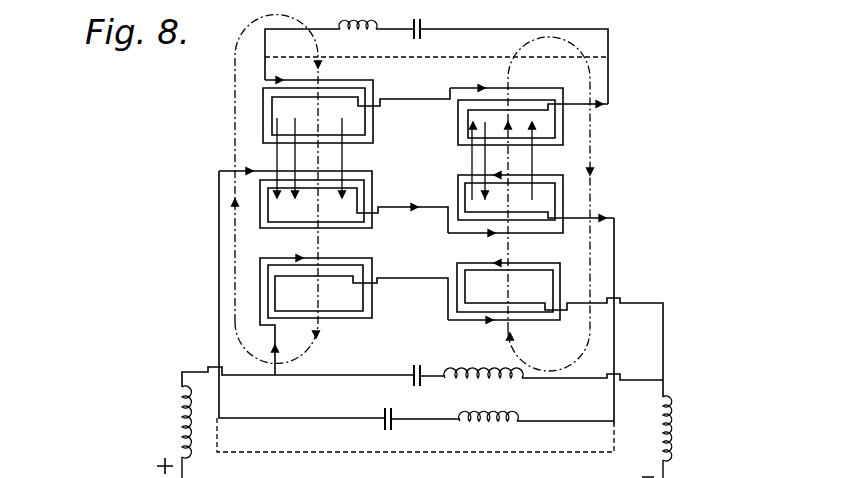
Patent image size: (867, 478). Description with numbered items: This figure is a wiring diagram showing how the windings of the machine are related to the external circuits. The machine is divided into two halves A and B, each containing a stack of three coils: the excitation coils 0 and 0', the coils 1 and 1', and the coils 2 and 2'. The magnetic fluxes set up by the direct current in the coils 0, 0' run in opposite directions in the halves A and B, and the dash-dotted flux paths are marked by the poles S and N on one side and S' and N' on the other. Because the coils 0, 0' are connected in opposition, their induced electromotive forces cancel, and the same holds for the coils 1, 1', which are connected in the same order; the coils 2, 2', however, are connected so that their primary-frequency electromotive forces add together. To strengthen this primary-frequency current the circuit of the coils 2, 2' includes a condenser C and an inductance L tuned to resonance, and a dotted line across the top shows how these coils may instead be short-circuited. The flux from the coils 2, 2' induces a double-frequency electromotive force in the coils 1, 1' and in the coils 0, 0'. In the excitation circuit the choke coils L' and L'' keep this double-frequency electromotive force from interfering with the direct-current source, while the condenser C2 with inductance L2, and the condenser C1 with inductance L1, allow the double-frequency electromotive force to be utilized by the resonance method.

The excitation coil 0 is at (354, 315).
The excitation coil 0' is at (541, 329).
The coil 1 is at (333, 211).
The coil 1' is at (522, 217).
The coil 2 is at (356, 102).
The coil 2' is at (526, 104).
The inductance L is at (374, 14).
The condenser C is at (433, 22).
The inductance L1 is at (495, 436).
The inductance L2 is at (498, 392).
The condenser C1 is at (394, 428).
The condenser C2 is at (412, 383).
The choke coil L' is at (164, 432).
The choke coil L'' is at (689, 437).
The south pole S is at (277, 189).
The north pole N is at (324, 247).
The south pole S' is at (550, 204).
The north pole N' is at (603, 251).
The half of the machine A is at (317, 353).
The half of the machine B is at (488, 349).